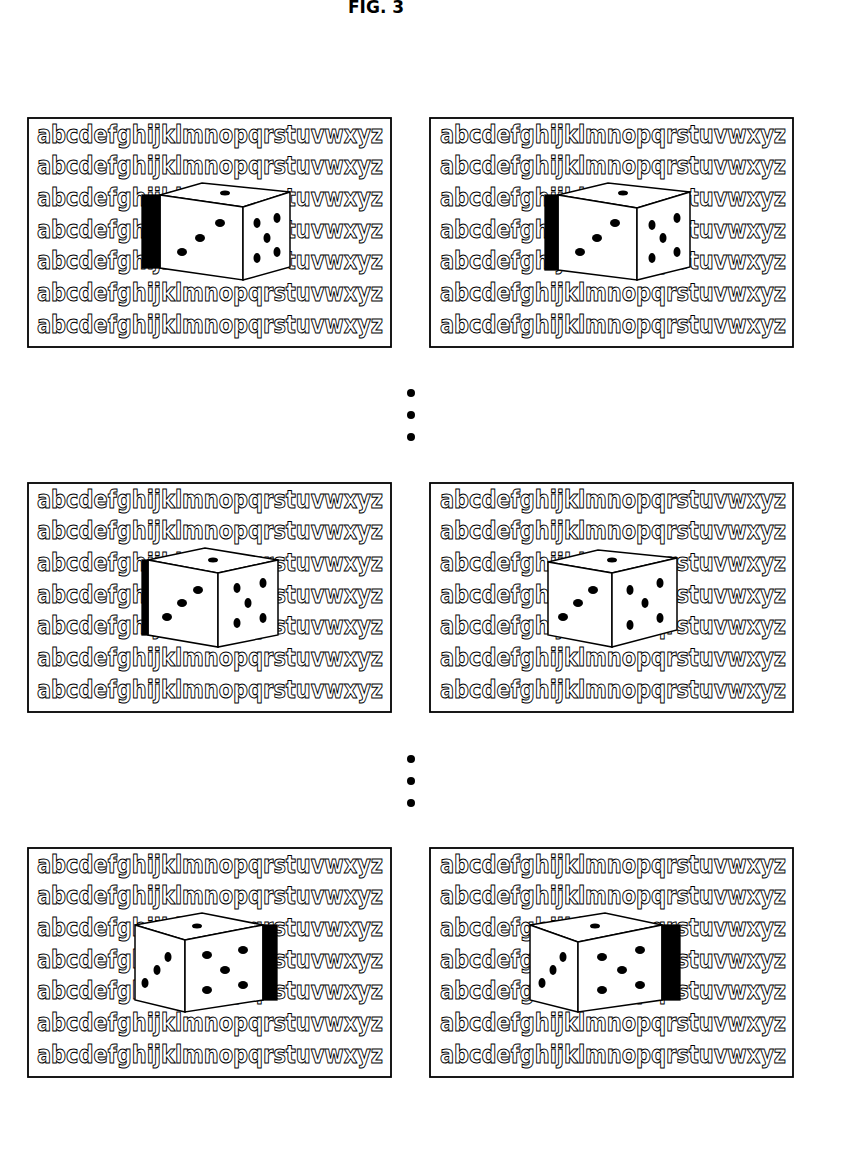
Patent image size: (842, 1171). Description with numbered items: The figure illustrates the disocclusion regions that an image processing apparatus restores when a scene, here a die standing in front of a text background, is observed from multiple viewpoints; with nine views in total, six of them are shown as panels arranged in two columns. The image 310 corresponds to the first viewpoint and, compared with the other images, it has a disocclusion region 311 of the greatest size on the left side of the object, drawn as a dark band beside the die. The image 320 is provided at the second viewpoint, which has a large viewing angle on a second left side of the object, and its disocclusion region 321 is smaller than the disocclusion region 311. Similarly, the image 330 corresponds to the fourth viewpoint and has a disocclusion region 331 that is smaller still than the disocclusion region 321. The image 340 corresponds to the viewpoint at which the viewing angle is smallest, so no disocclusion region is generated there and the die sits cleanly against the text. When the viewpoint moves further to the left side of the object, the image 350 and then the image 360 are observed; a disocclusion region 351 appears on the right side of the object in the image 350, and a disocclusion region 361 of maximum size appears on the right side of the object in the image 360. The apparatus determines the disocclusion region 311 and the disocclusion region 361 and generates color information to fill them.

The image 310 is at (382, 100).
The disocclusion region 311 is at (146, 270).
The image 320 is at (785, 100).
The disocclusion region 321 is at (555, 270).
The image 330 is at (382, 466).
The disocclusion region 331 is at (144, 636).
The image 340 is at (785, 466).
The image 350 is at (382, 830).
The disocclusion region 351 is at (272, 1000).
The image 360 is at (785, 830).
The disocclusion region 361 is at (673, 1000).